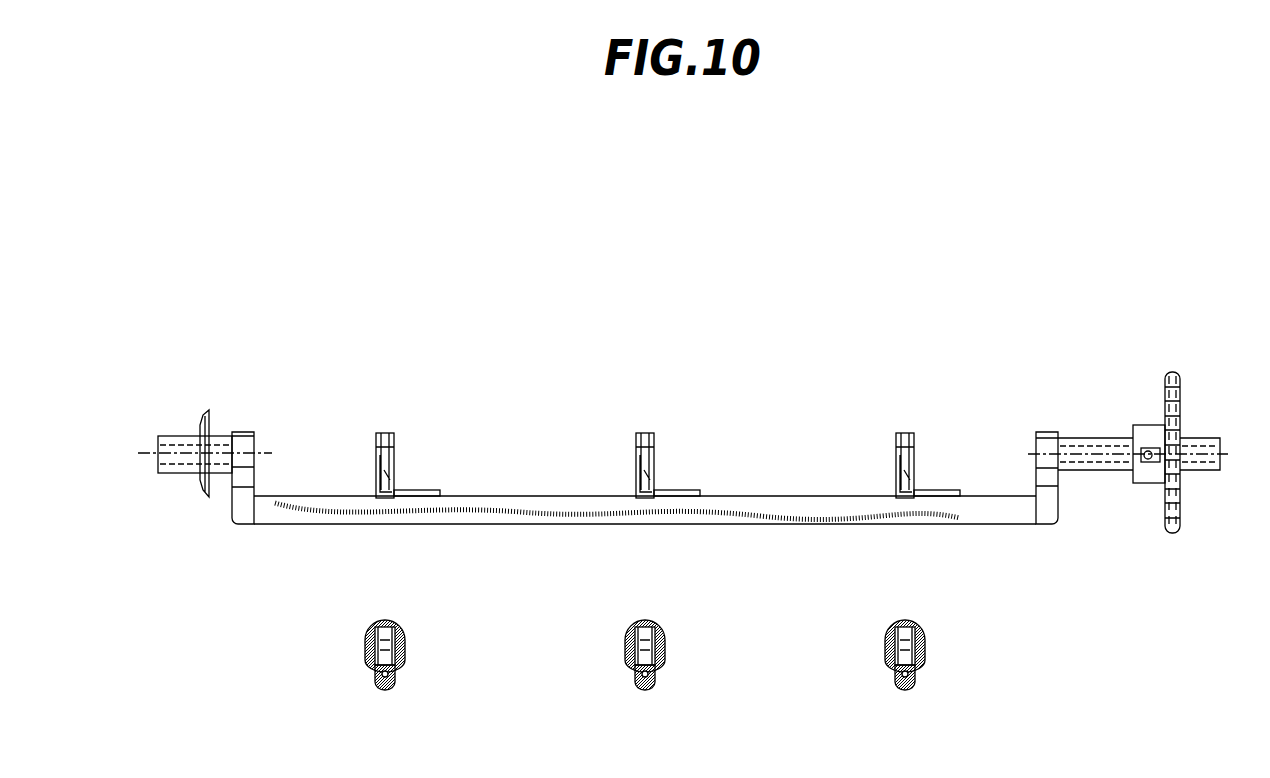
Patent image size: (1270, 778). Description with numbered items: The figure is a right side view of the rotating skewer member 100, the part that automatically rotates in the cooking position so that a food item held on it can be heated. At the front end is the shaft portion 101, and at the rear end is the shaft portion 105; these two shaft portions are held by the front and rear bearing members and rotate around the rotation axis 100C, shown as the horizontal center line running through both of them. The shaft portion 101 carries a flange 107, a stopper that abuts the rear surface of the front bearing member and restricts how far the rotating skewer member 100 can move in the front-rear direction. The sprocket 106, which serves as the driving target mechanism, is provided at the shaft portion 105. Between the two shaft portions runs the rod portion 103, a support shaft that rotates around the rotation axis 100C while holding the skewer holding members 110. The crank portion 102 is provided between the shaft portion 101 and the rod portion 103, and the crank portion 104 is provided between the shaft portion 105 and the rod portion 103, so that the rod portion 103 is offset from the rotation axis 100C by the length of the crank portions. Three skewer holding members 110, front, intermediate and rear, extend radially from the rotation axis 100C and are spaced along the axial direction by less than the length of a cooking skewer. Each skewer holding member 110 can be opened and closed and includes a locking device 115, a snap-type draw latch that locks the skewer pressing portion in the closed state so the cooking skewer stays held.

The rotating skewer member 100 is at (1141, 247).
The rotation axis 100C is at (220, 455).
The shaft portion 101 is at (174, 420).
The crank portion 102 is at (278, 444).
The rod portion 103 is at (790, 515).
The crank portion 104 is at (1012, 455).
The shaft portion 105 is at (1088, 497).
The sprocket 106 is at (1167, 533).
The flange 107 is at (207, 496).
The skewer holding member 110 is at (388, 409).
The locking device 115 is at (397, 677).